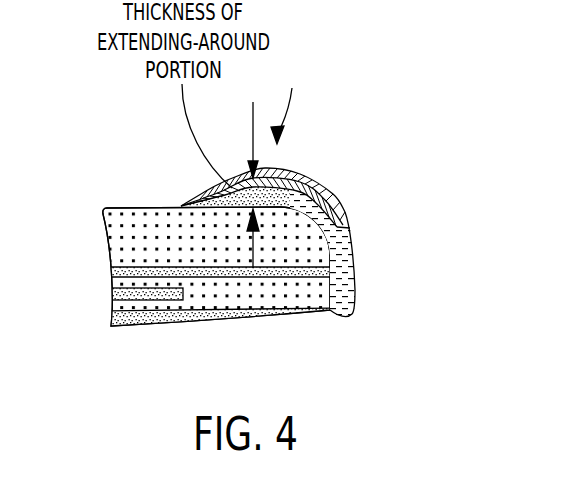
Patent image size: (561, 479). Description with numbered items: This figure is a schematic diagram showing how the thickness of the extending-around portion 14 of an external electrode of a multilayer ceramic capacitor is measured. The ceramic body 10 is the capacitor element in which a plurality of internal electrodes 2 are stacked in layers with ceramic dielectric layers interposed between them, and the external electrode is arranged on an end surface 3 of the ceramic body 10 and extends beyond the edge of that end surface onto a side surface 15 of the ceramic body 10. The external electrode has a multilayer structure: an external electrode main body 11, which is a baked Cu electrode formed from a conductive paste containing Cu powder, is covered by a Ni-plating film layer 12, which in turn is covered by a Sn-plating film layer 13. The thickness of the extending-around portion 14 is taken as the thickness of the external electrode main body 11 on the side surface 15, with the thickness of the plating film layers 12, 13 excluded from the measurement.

The internal electrodes 2 is at (175, 280).
The end surface 3 is at (330, 302).
The ceramic body 10 is at (118, 208).
The external electrode main body 11 is at (293, 176).
The Ni-plating film layer 12 is at (316, 194).
The Sn-plating film layer 13 is at (347, 210).
The extending-around portion 14 is at (283, 103).
The side surface 15 is at (160, 208).